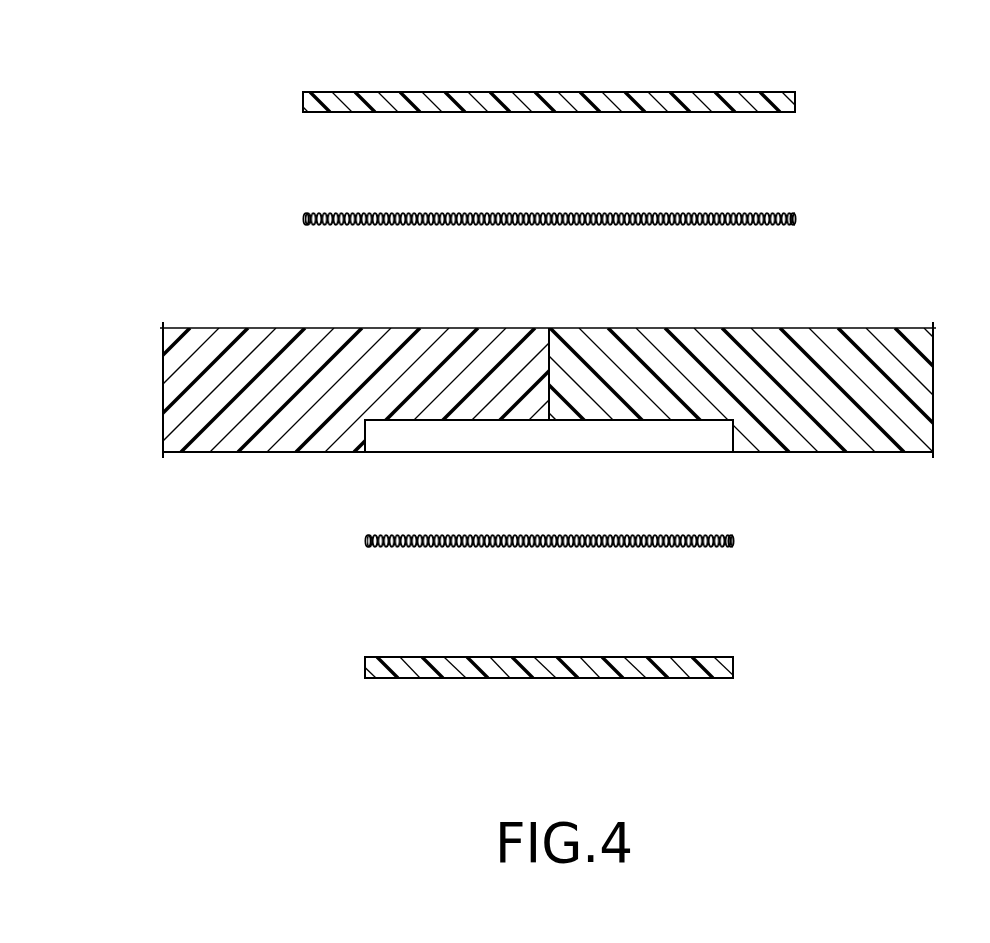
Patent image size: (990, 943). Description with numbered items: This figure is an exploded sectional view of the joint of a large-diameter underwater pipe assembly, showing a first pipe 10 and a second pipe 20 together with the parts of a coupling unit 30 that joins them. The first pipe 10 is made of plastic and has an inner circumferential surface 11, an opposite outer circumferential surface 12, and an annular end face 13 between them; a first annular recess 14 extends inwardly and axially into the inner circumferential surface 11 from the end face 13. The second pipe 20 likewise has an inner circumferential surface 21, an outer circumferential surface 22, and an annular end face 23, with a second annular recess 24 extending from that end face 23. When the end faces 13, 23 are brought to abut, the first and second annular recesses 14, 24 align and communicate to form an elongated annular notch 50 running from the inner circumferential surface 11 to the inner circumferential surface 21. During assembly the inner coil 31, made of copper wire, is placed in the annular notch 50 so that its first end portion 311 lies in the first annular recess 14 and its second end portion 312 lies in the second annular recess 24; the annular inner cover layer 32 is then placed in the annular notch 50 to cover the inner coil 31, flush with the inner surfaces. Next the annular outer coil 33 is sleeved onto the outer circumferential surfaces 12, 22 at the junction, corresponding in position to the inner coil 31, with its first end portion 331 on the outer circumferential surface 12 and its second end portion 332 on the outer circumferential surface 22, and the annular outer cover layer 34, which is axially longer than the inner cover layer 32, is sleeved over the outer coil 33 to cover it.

The first pipe 10 is at (180, 314).
The inner circumferential surface 11 is at (205, 453).
The outer circumferential surface 12 is at (243, 328).
The annular end face 13 is at (549, 369).
The first annular recess 14 is at (365, 443).
The second pipe 20 is at (911, 314).
The inner circumferential surface 21 is at (878, 453).
The outer circumferential surface 22 is at (851, 328).
The annular end face 23 is at (549, 386).
The second annular recess 24 is at (733, 443).
The coupling unit 30 is at (706, 693).
The inner coil 31 is at (400, 547).
The first end portion 311 is at (367, 541).
The second end portion 312 is at (733, 541).
The inner cover layer 32 is at (649, 673).
The outer coil 33 is at (688, 213).
The first end portion 331 is at (303, 218).
The second end portion 332 is at (796, 218).
The outer cover layer 34 is at (552, 102).
The annular notch 50 is at (556, 453).